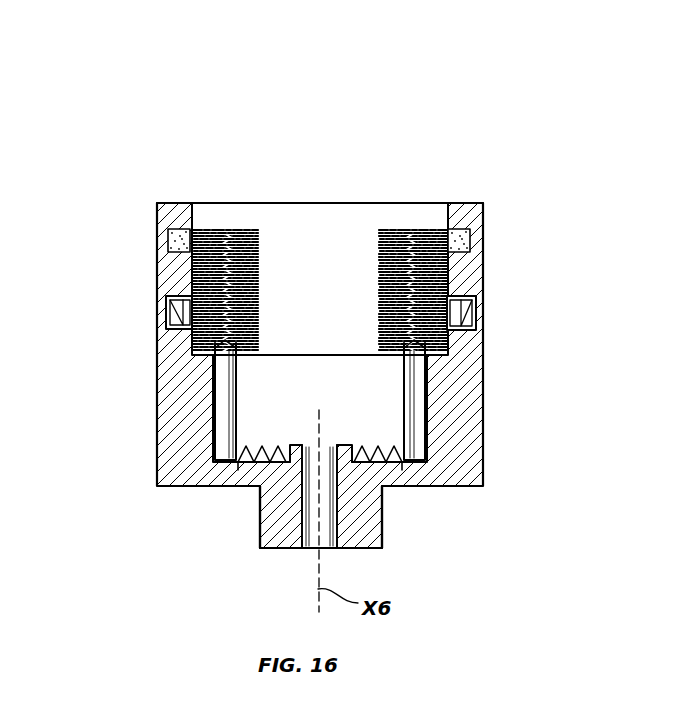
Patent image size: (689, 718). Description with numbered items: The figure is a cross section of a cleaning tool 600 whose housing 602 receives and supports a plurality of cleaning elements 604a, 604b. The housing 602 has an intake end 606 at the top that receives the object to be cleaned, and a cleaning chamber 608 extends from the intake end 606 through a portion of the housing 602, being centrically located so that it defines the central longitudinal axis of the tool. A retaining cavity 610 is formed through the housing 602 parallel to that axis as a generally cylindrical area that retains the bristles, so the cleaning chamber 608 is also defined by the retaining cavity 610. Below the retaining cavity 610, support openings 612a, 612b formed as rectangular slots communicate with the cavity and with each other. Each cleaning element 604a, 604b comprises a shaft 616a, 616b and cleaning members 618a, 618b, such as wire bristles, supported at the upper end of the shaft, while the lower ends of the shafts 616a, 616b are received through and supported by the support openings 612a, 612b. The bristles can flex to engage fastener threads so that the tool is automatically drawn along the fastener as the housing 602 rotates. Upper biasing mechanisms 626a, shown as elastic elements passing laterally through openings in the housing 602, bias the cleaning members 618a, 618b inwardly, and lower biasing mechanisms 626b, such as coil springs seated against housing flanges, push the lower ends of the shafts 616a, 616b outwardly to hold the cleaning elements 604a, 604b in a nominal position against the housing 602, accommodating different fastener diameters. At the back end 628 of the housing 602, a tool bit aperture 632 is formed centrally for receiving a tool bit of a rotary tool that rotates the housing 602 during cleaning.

The cleaning tool 600 is at (142, 115).
The housing 602 is at (462, 455).
The cleaning element 604a is at (205, 268).
The cleaning element 604b is at (443, 265).
The intake end 606 is at (462, 203).
The cleaning chamber 608 is at (318, 240).
The retaining cavity 610 is at (320, 237).
The support opening 612a is at (258, 432).
The support opening 612b is at (378, 367).
The shaft 616a is at (222, 403).
The shaft 616b is at (413, 402).
The cleaning member 618a is at (200, 283).
The cleaning member 618b is at (445, 281).
The upper biasing mechanism 626a is at (172, 316).
The lower biasing mechanism 626b is at (243, 467).
The back end 628 is at (382, 510).
The tool bit aperture 632 is at (306, 535).